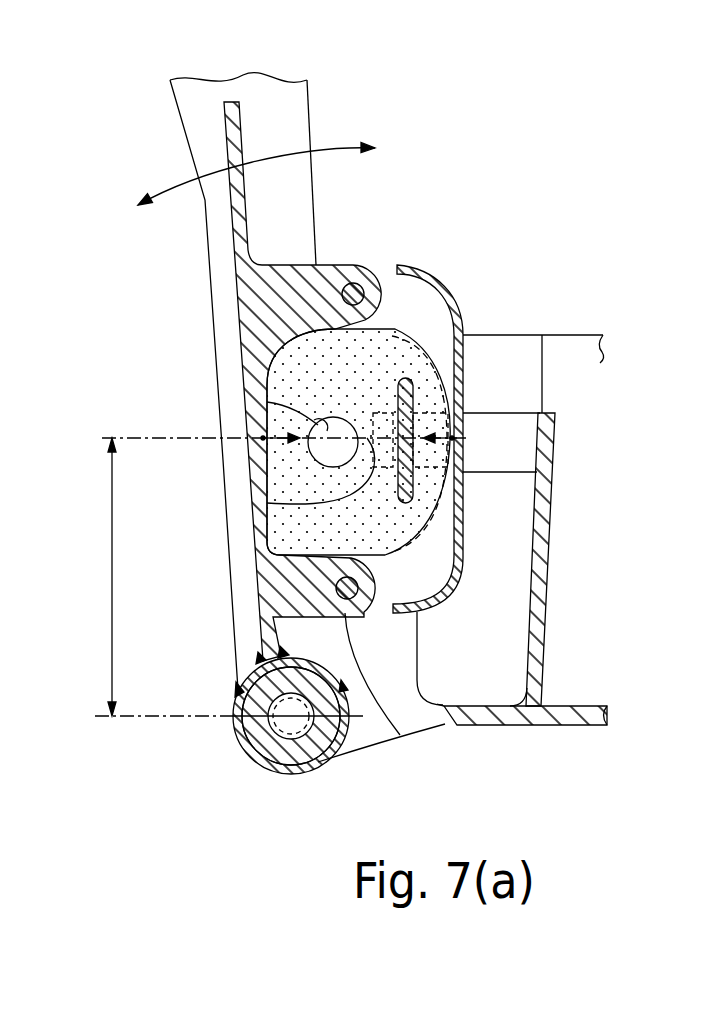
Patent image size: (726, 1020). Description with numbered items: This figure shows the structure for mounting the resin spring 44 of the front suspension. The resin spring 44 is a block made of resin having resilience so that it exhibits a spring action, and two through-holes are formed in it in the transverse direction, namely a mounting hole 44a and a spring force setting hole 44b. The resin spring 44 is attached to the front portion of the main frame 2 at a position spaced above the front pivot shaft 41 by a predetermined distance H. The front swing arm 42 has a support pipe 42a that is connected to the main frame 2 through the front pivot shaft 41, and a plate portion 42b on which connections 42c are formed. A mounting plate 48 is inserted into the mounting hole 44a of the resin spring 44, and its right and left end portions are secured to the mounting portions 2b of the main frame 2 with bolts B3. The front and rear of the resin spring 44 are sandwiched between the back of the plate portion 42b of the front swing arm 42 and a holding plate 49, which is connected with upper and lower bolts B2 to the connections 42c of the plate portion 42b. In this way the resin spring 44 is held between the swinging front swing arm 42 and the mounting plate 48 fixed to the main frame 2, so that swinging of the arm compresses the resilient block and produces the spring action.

The main frame 2 is at (596, 725).
The mounting portions 2b is at (517, 438).
The front pivot shaft 41 is at (260, 754).
The front swing arm 42 is at (197, 217).
The support pipe 42a is at (235, 733).
The plate portion 42b is at (240, 235).
The connections 42c is at (353, 283).
The resin spring 44 is at (388, 355).
The mounting hole 44a is at (446, 512).
The spring force setting hole 44b is at (266, 378).
The mounting plate 48 is at (413, 382).
The holding plate 49 is at (422, 265).
The bolts B2 is at (360, 283).
The bolts B3 is at (267, 508).
The predetermined distance H is at (275, 577).